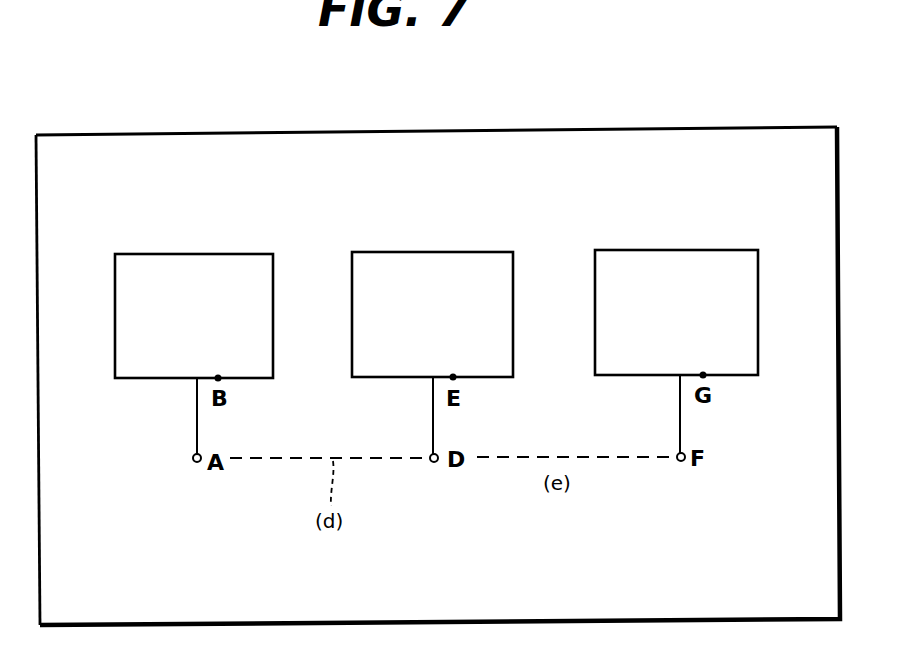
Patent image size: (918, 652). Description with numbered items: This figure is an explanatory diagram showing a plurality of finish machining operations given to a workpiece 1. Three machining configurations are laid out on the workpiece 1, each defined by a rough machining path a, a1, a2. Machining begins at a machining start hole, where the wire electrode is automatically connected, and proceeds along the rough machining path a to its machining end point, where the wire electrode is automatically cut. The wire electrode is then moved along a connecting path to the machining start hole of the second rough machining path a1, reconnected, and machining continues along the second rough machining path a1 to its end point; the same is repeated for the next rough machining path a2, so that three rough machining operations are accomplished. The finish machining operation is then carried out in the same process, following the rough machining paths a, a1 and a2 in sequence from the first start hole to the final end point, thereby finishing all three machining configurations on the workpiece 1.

The workpiece 1 is at (695, 127).
The rough machining path a is at (218, 254).
The second rough machining path a1 is at (447, 252).
The next rough machining path a2 is at (698, 250).